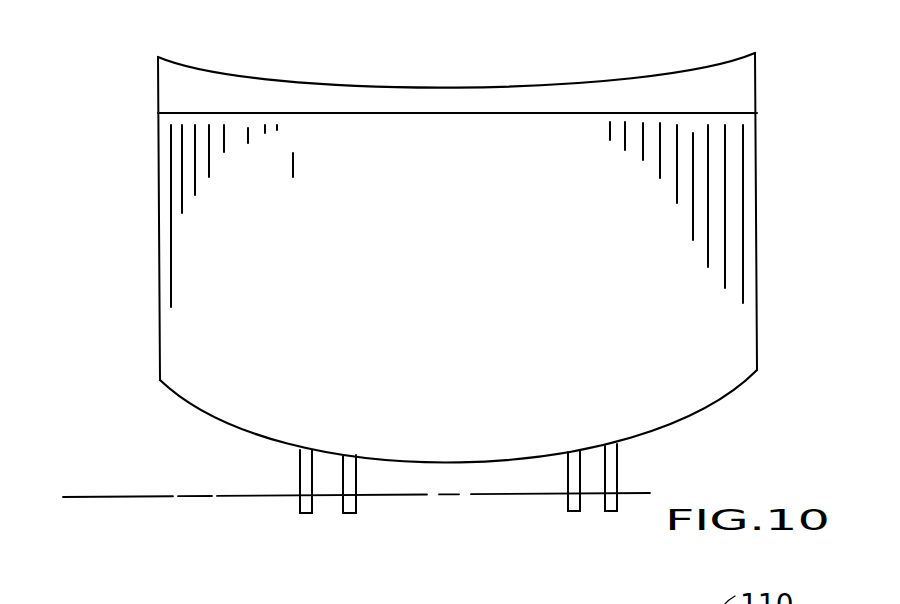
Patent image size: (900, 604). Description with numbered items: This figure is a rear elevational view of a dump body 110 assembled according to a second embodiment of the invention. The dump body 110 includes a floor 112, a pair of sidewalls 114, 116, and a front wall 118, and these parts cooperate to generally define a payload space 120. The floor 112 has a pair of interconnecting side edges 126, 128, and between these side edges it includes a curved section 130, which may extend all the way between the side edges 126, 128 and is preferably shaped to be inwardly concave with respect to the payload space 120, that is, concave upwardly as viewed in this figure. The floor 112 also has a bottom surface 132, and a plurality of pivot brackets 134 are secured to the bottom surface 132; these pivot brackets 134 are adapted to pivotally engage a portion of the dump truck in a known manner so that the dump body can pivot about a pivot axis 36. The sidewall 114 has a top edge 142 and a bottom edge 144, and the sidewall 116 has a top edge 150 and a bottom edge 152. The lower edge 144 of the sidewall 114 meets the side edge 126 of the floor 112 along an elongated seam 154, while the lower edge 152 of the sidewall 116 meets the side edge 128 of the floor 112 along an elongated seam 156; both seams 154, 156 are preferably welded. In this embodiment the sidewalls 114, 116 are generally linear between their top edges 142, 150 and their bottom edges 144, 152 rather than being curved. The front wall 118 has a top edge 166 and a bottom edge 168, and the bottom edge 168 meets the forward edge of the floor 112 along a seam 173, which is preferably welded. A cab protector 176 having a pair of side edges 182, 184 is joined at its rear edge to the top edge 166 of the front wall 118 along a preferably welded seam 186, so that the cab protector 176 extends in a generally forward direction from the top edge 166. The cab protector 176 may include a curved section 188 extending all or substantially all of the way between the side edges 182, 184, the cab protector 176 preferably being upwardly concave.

The dump body 110 is at (793, 155).
The floor 112 is at (457, 463).
The sidewall 114 is at (158, 252).
The sidewall 116 is at (757, 232).
The front wall 118 is at (378, 200).
The payload space 120 is at (495, 243).
The side edge 126 is at (160, 387).
The side edge 128 is at (758, 378).
The curved section 130 is at (397, 458).
The bottom surface 132 is at (672, 423).
The pivot brackets 134 is at (349, 515).
The top edge 142 is at (158, 113).
The bottom edge 144 is at (158, 380).
The top edge 150 is at (757, 112).
The bottom edge 152 is at (757, 370).
The seam 154 is at (160, 380).
The seam 156 is at (757, 370).
The top edge 166 is at (308, 115).
The bottom edge 168 is at (226, 422).
The seam 173 is at (284, 445).
The cab protector 176 is at (604, 78).
The side edge 182 is at (158, 82).
The side edge 184 is at (759, 62).
The seam 186 is at (462, 115).
The curved section 188 is at (260, 78).
The pivot axis 36 is at (168, 497).